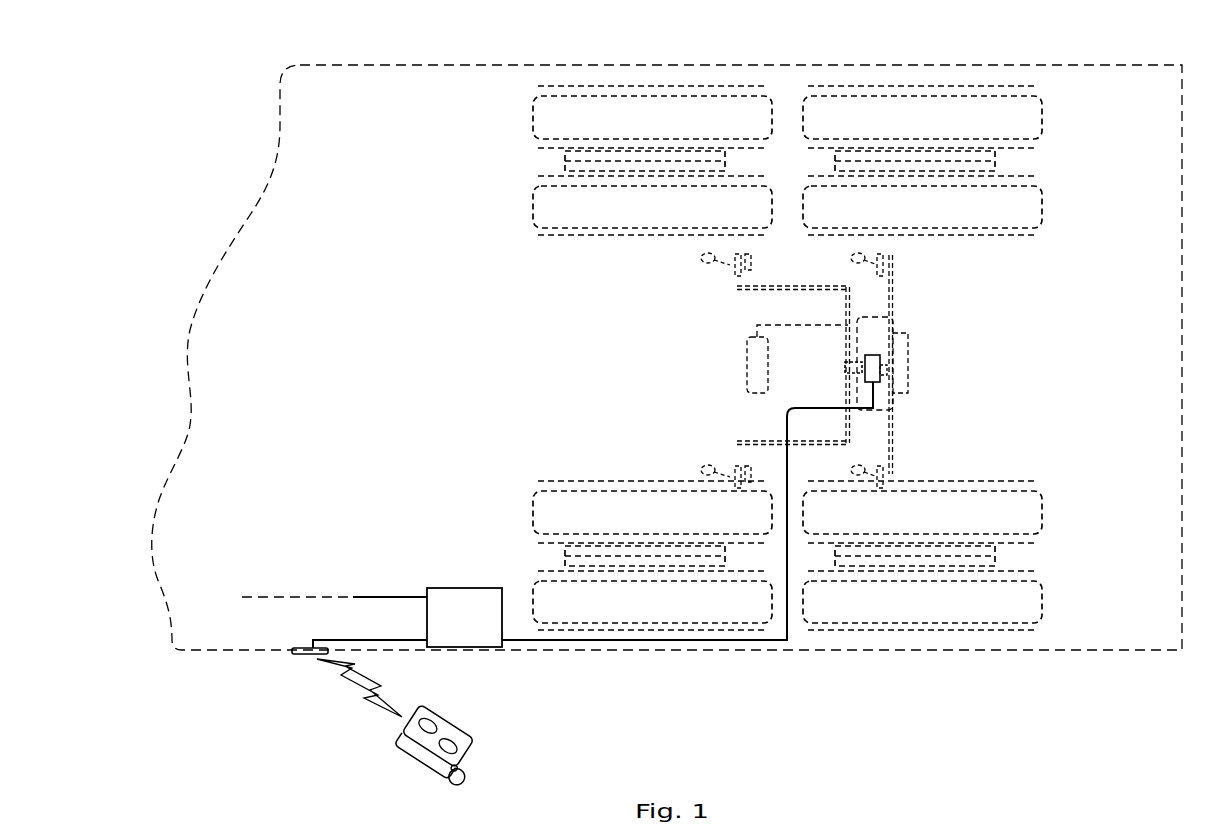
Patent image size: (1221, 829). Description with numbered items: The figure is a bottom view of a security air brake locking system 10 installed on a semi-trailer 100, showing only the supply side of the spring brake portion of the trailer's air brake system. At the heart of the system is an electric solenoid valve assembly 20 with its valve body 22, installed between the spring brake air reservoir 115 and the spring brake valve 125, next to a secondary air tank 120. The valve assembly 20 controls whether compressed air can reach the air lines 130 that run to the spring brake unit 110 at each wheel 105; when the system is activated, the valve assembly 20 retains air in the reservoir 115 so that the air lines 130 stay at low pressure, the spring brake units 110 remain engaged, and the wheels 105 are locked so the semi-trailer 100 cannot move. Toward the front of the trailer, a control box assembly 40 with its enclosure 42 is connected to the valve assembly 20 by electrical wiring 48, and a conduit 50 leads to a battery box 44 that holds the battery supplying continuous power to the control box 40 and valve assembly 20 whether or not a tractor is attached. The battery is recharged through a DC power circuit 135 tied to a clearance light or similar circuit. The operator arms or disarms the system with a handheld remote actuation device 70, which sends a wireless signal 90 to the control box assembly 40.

The security air brake locking system 10 is at (397, 266).
The valve assembly 20 is at (936, 358).
The valve body 22 is at (875, 362).
The control box assembly 40 is at (286, 681).
The enclosure 42 is at (290, 652).
The battery box 44 is at (458, 588).
The wiring 48 is at (337, 640).
The conduit 50 is at (382, 597).
The remote actuation device 70 is at (472, 714).
The wireless signal 90 is at (345, 682).
The semi-trailer 100 is at (1145, 651).
The wheel 105 is at (723, 108).
The spring brake unit 110 is at (865, 263).
The spring brake air reservoir 115 is at (907, 382).
The secondary air tank 120 is at (757, 367).
The spring brake valve 125 is at (845, 363).
The air line 130 is at (850, 297).
The DC power circuit 135 is at (310, 597).